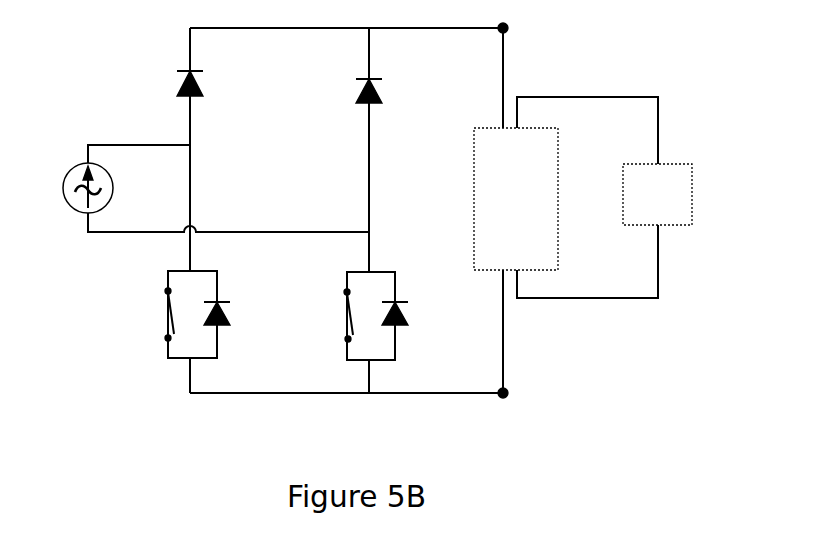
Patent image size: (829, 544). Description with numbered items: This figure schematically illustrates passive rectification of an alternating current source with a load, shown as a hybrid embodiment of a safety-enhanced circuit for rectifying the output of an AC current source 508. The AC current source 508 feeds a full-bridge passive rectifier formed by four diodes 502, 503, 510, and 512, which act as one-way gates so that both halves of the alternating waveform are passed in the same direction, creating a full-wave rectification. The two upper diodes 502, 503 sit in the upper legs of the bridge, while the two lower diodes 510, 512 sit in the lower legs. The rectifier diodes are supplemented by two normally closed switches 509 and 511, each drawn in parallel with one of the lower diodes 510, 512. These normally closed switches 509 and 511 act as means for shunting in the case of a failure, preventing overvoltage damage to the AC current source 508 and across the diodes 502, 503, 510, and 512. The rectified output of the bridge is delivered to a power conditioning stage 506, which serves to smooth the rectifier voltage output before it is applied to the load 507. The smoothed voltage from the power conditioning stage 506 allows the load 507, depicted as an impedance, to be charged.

The full-bridge passive rectifier diode 502 is at (168, 79).
The full-bridge passive rectifier diode 503 is at (397, 88).
The power conditioning stage 506 is at (516, 199).
The load 507 is at (686, 194).
The AC current source 508 is at (61, 188).
The normally closed switch 509 is at (171, 314).
The full-bridge passive rectifier diode 510 is at (236, 326).
The normally closed switch 511 is at (346, 316).
The full-bridge passive rectifier diode 512 is at (415, 327).